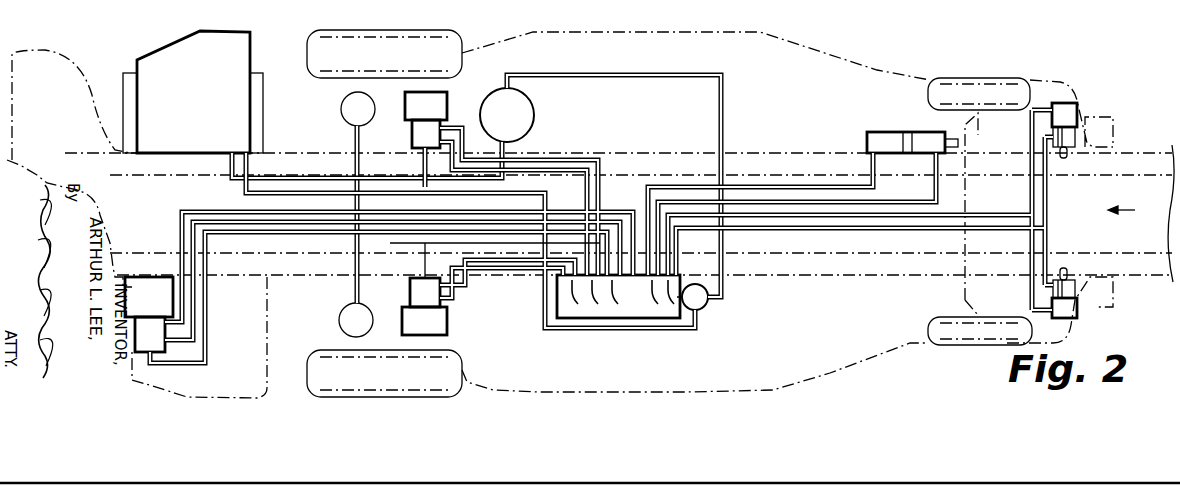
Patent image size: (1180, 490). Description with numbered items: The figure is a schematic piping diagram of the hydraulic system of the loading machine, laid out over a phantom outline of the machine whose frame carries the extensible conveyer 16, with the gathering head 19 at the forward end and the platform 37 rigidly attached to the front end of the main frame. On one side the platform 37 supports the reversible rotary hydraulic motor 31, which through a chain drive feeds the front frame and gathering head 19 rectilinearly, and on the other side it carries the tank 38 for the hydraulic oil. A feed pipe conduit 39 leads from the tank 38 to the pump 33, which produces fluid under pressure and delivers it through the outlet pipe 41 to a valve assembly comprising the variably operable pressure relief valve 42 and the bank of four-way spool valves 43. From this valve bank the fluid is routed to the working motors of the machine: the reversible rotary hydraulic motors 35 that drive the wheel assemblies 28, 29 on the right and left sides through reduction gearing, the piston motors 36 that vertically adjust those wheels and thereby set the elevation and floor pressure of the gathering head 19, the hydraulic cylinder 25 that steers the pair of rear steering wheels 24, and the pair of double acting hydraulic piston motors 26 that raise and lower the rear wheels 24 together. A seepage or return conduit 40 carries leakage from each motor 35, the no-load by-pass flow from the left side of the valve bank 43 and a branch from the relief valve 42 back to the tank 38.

The extensible conveyer 16 is at (1133, 210).
The gathering head 19 is at (80, 60).
The rear steering wheels 24 is at (1020, 72).
The hydraulic cylinder 25 is at (888, 130).
The double acting hydraulic piston motors 26 is at (1072, 110).
The wheel assembly 28 is at (440, 45).
The wheel assembly 29 is at (325, 362).
The reversible rotary hydraulic motor 31 is at (149, 314).
The pump 33 is at (507, 115).
The reversible rotary hydraulic motor 35 is at (424, 213).
The piston motors 36 is at (357, 214).
The platform 37 is at (268, 88).
The tank 38 is at (193, 92).
The feed pipe conduit 39 is at (285, 178).
The return conduit 40 is at (232, 188).
The outlet pipe 41 is at (648, 73).
The variably operable pressure relief valve 42 is at (710, 305).
The bank of four-way spool valves 43 is at (613, 322).